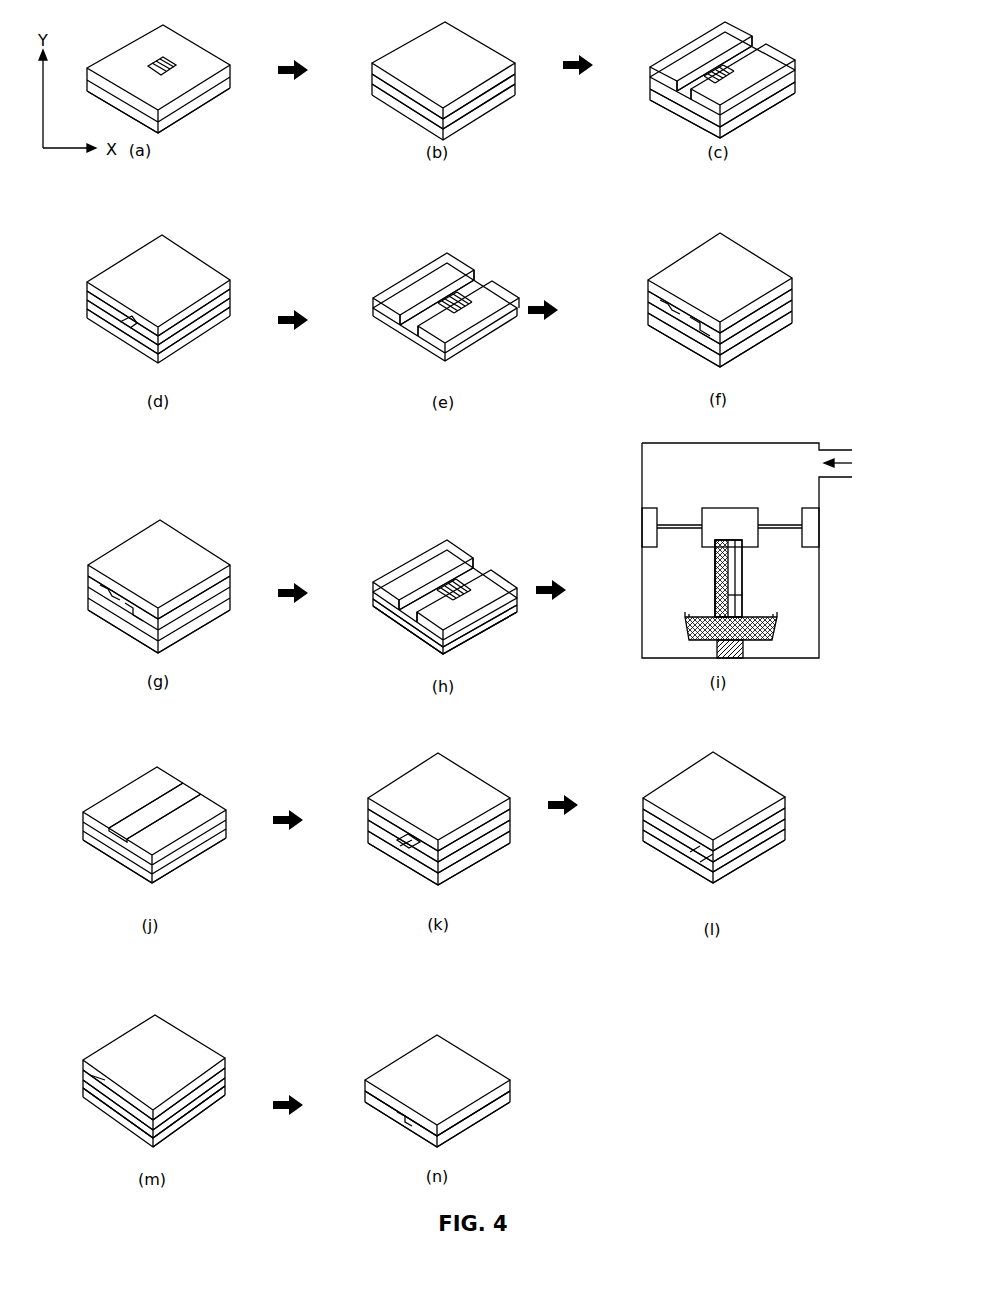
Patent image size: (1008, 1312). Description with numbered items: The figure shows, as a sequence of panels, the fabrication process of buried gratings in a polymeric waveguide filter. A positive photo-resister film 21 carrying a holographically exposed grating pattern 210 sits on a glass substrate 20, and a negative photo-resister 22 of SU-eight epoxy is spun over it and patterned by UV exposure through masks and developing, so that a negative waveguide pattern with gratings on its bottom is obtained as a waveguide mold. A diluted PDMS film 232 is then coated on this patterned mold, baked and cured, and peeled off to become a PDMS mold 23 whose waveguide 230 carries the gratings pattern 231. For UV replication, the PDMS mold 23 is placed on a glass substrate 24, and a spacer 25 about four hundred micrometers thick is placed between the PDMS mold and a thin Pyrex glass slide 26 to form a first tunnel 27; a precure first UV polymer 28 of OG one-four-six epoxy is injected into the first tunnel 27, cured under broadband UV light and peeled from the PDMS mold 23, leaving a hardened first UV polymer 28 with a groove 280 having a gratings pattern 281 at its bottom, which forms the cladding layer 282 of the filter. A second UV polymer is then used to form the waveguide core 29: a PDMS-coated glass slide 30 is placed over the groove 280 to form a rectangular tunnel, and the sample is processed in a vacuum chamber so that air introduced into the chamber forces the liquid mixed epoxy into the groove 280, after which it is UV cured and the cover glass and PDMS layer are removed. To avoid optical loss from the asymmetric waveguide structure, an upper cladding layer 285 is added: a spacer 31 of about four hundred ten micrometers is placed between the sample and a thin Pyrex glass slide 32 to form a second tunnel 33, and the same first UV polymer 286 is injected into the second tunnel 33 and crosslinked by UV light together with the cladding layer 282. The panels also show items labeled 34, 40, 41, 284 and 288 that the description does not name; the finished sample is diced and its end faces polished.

The substrate 20 is at (113, 96).
The positive photo-resister film 21 is at (117, 65).
The negative photo-resister 22 is at (402, 72).
The PDMS mold 23 is at (493, 308).
The glass substrate 24 is at (783, 323).
The spacer 25 is at (787, 298).
The thin Pyrex glass slide 26 is at (777, 280).
The first tunnel 27 is at (653, 320).
The first UV polymer 28 is at (785, 308).
The waveguide core 29 is at (167, 802).
The glass slide 30 is at (740, 573).
The spacer 31 is at (370, 815).
The thin Pyrex glass slide 32 is at (487, 795).
The second tunnel 33 is at (417, 852).
The side face 34 is at (173, 1125).
The processing chamber 40 is at (800, 622).
The stage 41 is at (750, 640).
The grating pattern 210 is at (153, 55).
The waveguide 230 is at (752, 53).
The gratings pattern 231 is at (728, 60).
The PDMS film 232 is at (108, 282).
The groove 280 is at (465, 580).
The gratings pattern 281 is at (443, 580).
The cladding layer 282 is at (440, 618).
The layer portion 284 is at (692, 853).
The upper cladding layer 285 is at (468, 1077).
The first UV polymer 286 is at (707, 872).
The bottom portion 288 is at (730, 595).